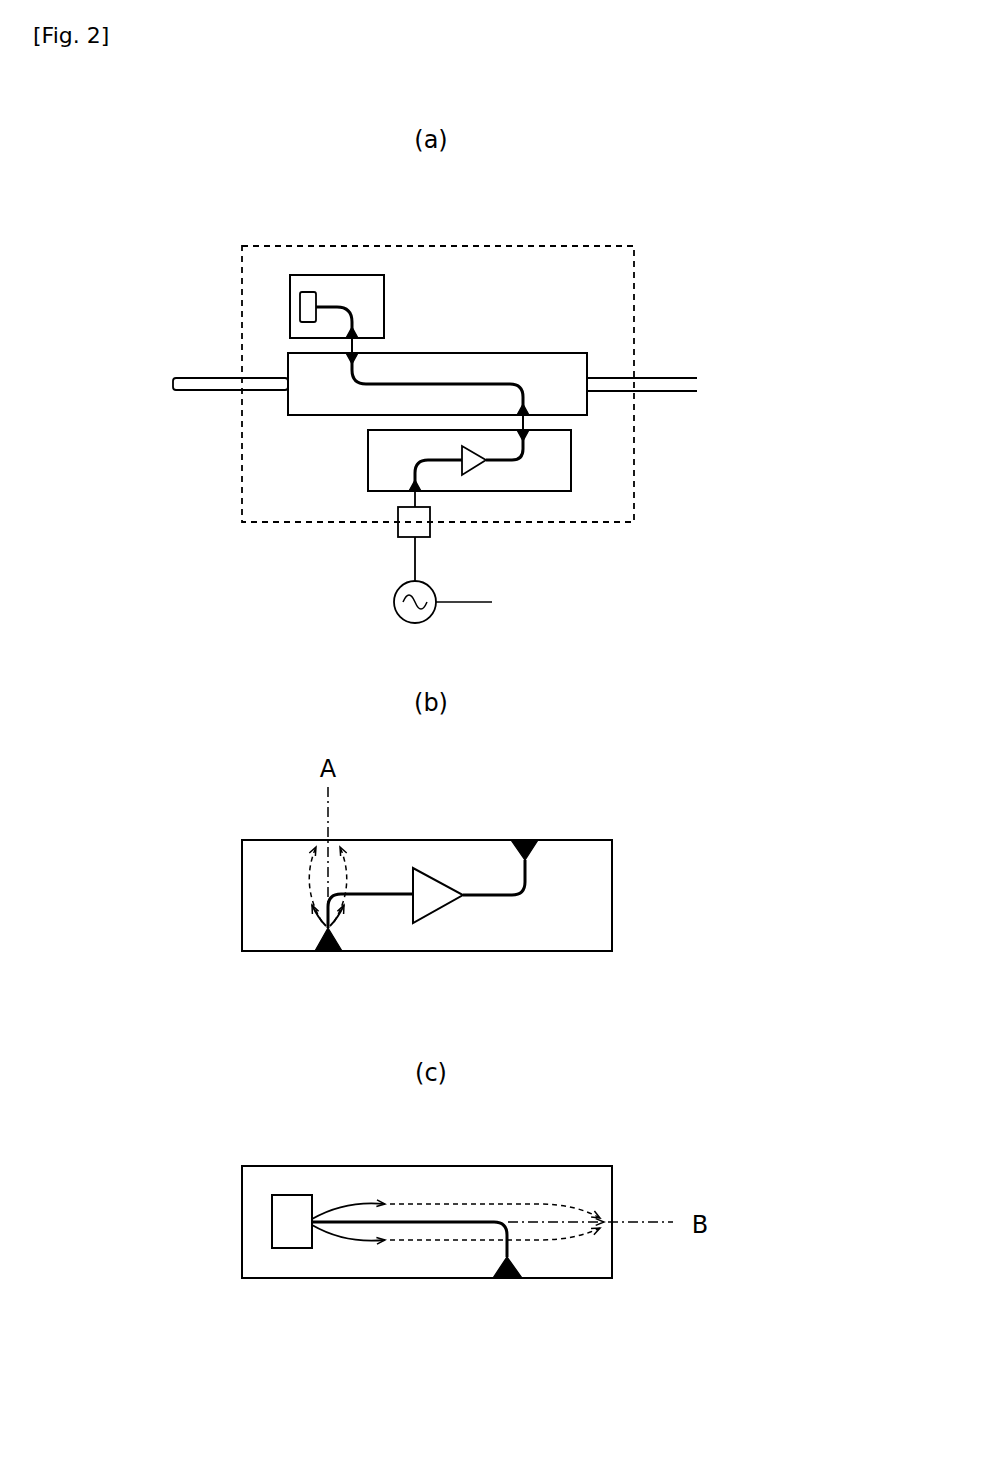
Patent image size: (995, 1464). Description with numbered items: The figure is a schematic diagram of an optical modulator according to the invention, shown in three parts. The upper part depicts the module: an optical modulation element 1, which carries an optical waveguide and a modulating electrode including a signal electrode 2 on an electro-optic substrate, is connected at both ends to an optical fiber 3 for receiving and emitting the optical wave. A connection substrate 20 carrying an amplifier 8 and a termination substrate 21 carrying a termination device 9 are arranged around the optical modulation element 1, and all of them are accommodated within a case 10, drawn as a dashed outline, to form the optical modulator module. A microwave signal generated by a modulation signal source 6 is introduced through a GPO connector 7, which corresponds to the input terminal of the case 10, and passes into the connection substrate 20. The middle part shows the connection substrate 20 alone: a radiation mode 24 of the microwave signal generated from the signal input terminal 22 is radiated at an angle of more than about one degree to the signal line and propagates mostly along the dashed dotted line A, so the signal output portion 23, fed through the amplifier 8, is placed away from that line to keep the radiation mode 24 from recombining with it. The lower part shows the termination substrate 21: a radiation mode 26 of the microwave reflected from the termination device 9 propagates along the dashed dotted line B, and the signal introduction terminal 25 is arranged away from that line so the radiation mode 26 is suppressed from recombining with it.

The optical modulation element 1 is at (555, 352).
The signal electrode 2 is at (460, 382).
The optical fiber 3 is at (223, 390).
The modulation signal source 6 is at (454, 580).
The GPO connector 7 is at (413, 522).
The amplifier 8 is at (475, 465).
The termination device 9 is at (307, 292).
The case 10 is at (288, 523).
The connection substrate 20 is at (577, 462).
The termination substrate 21 is at (353, 263).
The signal input terminal 22 is at (332, 953).
The signal output portion 23 is at (528, 838).
The radiation mode 24 is at (316, 927).
The signal introduction terminal 25 is at (508, 1280).
The radiation mode 26 is at (347, 1205).